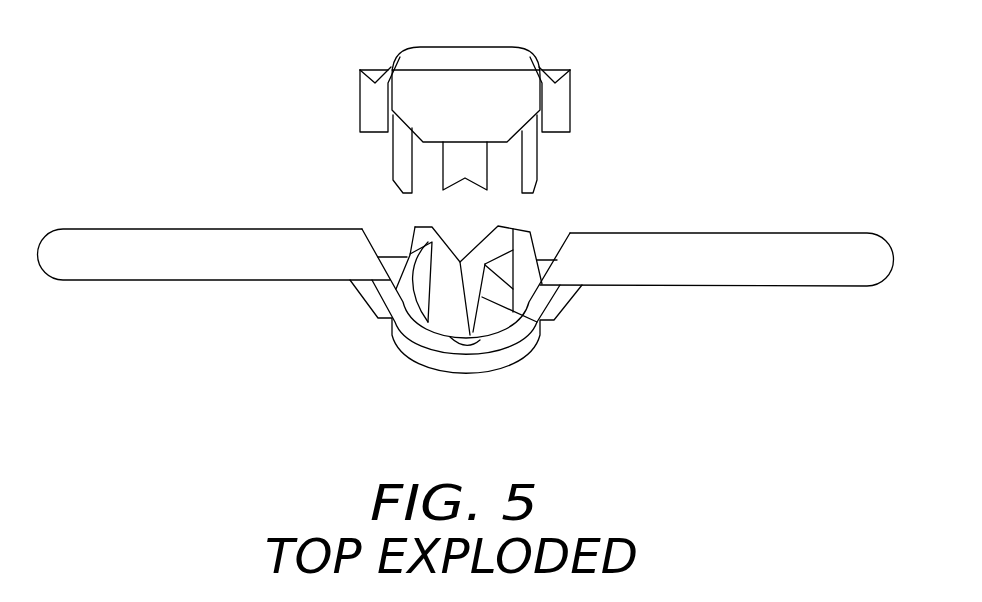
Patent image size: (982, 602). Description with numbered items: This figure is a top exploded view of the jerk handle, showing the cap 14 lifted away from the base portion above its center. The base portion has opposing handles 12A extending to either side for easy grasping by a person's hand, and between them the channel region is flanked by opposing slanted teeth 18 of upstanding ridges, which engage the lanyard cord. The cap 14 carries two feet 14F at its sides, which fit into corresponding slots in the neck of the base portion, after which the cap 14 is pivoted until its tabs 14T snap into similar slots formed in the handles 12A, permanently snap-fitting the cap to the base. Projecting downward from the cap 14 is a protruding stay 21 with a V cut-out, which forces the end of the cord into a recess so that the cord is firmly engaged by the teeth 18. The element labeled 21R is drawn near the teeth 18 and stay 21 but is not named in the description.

The handles 12A is at (163, 230).
The cap 14 is at (485, 50).
The feet 14F is at (360, 115).
The tabs 14T is at (393, 178).
The slanted teeth 18 is at (540, 320).
The protruding stay 21 is at (465, 189).
The post ribs 21R is at (470, 333).